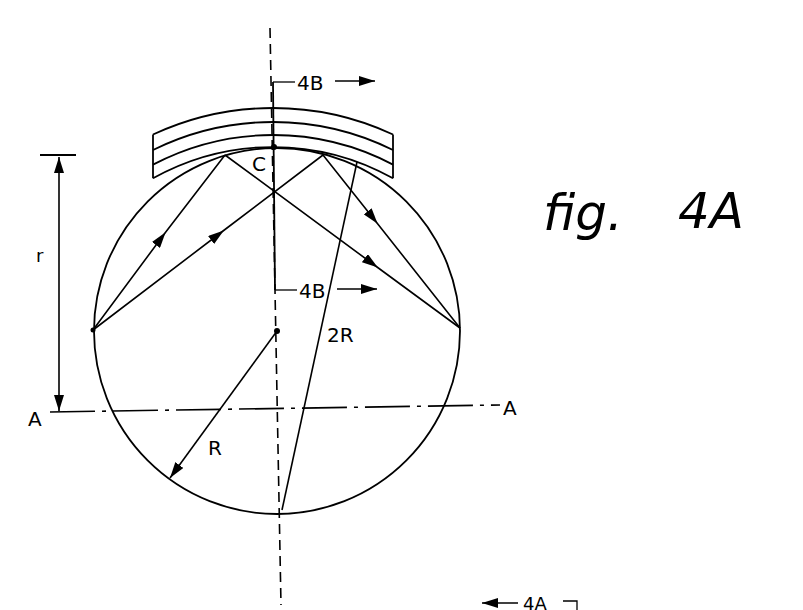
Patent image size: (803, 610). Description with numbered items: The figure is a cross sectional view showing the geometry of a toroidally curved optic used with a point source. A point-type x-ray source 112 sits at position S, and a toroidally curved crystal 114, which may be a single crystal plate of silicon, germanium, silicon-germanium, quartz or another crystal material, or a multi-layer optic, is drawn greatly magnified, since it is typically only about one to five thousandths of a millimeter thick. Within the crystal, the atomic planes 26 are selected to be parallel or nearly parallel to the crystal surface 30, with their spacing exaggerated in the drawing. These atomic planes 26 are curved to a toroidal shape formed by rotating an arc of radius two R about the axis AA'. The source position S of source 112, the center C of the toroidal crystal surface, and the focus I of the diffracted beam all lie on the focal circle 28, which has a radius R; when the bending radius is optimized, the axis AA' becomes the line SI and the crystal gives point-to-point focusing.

The atomic planes 26 is at (271, 107).
The focal circle 28 is at (127, 447).
The crystal surface 30 is at (152, 197).
The point-type x-ray source 112 is at (93, 330).
The toroidally curved crystal 114 is at (181, 123).